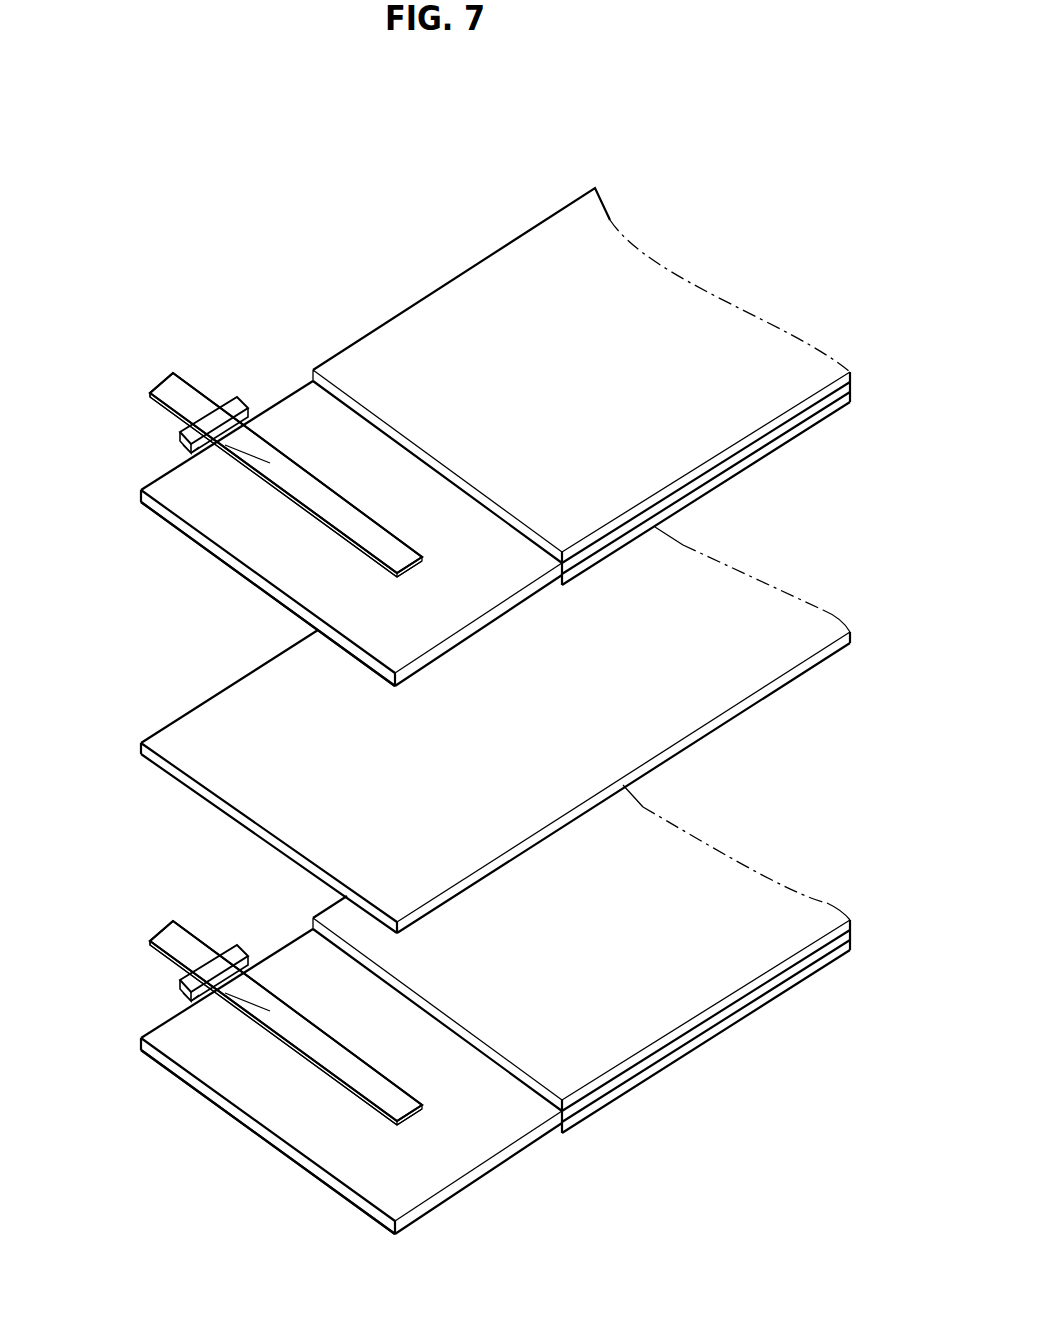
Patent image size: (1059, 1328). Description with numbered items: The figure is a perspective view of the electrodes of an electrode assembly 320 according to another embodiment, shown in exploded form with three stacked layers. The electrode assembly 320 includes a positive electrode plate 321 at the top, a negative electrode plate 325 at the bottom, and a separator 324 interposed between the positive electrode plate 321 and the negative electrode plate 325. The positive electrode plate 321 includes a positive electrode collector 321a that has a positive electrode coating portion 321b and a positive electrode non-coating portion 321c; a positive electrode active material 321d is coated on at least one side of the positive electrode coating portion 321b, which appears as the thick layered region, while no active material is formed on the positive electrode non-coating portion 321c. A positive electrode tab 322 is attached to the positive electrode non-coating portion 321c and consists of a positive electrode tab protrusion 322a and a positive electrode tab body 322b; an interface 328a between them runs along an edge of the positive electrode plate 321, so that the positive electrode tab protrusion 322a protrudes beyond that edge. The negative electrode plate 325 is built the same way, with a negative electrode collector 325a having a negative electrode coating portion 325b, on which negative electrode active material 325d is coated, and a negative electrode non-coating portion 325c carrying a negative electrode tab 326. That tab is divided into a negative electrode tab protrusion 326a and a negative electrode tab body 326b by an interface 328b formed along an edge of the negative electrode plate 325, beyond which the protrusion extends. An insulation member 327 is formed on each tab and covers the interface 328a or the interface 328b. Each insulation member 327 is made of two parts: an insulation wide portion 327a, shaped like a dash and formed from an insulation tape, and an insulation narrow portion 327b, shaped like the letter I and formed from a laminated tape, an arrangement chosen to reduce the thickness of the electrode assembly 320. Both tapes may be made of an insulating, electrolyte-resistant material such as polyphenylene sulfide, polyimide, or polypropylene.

The electrode assembly 320 is at (152, 187).
The positive electrode plate 321 is at (168, 545).
The positive electrode collector 321a is at (237, 566).
The positive electrode coating portion 321b is at (693, 312).
The positive electrode non-coating portion 321c is at (433, 632).
The positive electrode active material 321d is at (850, 372).
The positive electrode tab 322 is at (86, 340).
The positive electrode tab protrusion 322a is at (163, 385).
The positive electrode tab body 322b is at (183, 436).
The separator 324 is at (178, 734).
The negative electrode plate 325 is at (168, 1093).
The negative electrode collector 325a is at (278, 1140).
The negative electrode coating portion 325b is at (762, 887).
The negative electrode non-coating portion 325c is at (433, 1180).
The negative electrode active material 325d is at (850, 920).
The negative electrode tab 326 is at (84, 888).
The negative electrode tab protrusion 326a is at (163, 933).
The negative electrode tab body 326b is at (183, 984).
The insulation member 327 is at (267, 320).
The insulation wide portion 327a is at (230, 408).
The insulation narrow portion 327b is at (253, 420).
The interface 328a is at (180, 453).
The interface 328b is at (180, 1001).